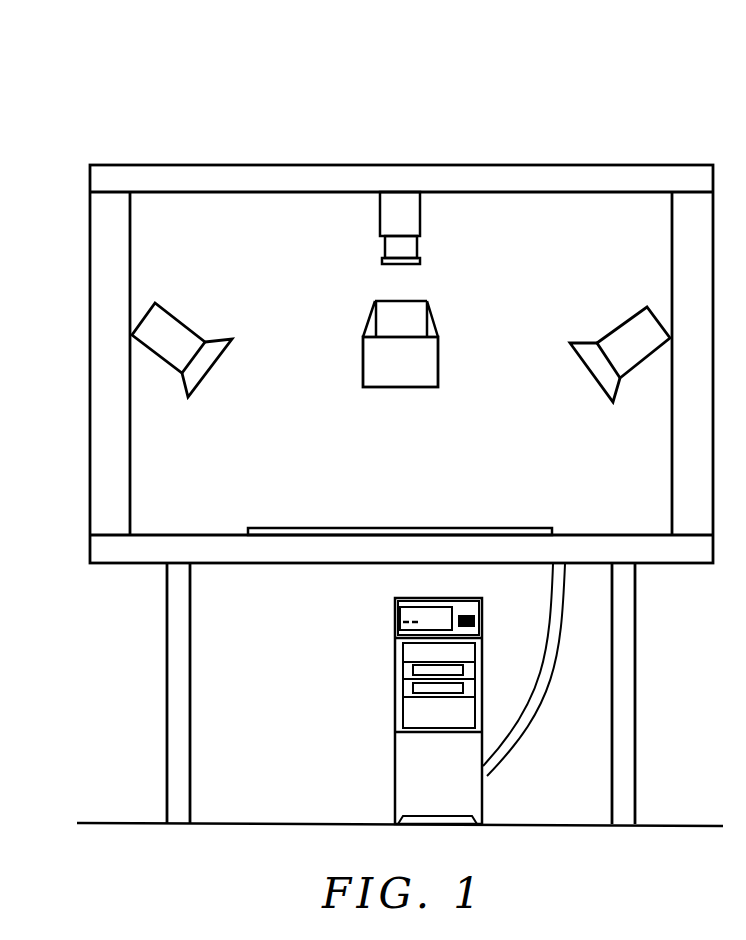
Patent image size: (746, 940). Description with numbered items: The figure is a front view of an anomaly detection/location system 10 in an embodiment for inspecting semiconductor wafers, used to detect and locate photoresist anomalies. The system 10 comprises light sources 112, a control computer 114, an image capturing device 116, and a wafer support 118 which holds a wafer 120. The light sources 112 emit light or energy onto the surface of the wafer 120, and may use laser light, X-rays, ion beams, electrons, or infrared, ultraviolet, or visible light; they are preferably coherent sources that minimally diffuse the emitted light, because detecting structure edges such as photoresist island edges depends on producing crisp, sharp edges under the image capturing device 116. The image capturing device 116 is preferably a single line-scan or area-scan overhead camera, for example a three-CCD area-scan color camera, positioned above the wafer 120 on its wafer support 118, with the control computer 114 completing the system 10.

The anomaly detection/location system 10 is at (64, 70).
The light sources 112 is at (180, 318).
The control computer 114 is at (395, 777).
The image capturing device 116 is at (380, 214).
The wafer support 118 is at (598, 535).
The wafer 120 is at (492, 528).